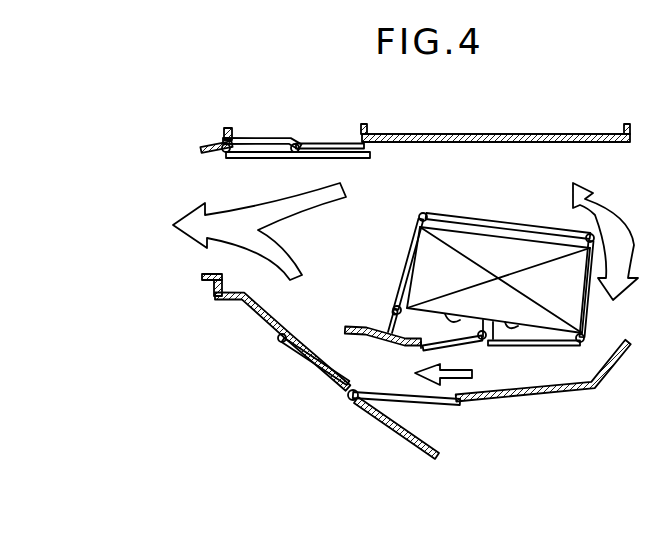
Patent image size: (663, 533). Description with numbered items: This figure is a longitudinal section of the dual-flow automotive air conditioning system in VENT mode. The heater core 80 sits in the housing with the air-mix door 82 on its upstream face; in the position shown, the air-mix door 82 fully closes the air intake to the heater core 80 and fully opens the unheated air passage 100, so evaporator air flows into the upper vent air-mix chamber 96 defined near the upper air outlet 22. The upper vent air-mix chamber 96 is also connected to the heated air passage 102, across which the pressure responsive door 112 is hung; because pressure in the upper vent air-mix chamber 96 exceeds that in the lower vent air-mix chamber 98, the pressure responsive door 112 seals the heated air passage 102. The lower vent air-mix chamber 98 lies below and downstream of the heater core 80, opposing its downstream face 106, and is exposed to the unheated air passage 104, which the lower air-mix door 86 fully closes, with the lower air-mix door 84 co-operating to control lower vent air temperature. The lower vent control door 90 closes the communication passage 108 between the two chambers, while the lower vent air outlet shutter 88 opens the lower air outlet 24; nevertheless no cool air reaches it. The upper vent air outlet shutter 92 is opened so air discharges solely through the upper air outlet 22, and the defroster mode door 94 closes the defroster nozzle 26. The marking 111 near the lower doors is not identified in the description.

The film path direction 22 is at (215, 185).
The support arm 24 is at (440, 440).
The guide rail 26 is at (316, 142).
The film cassette holder 80 is at (493, 248).
The holder top rail 82 is at (533, 225).
The link 84 is at (470, 346).
The bottom rail 86 is at (533, 346).
The lower guide bar 88 is at (430, 405).
The lever 90 is at (300, 371).
The lower slide bar 92 is at (352, 161).
The upper slide bar 94 is at (250, 140).
The exit path 96 is at (257, 259).
The pivot 98 is at (345, 401).
The top plate 100 is at (510, 190).
The pivot plate 102 is at (383, 318).
The guide plate 104 is at (591, 360).
The roller 106 is at (458, 320).
The bracket 108 is at (312, 332).
The stop 111 is at (349, 358).
The direction arrow 112 is at (380, 334).